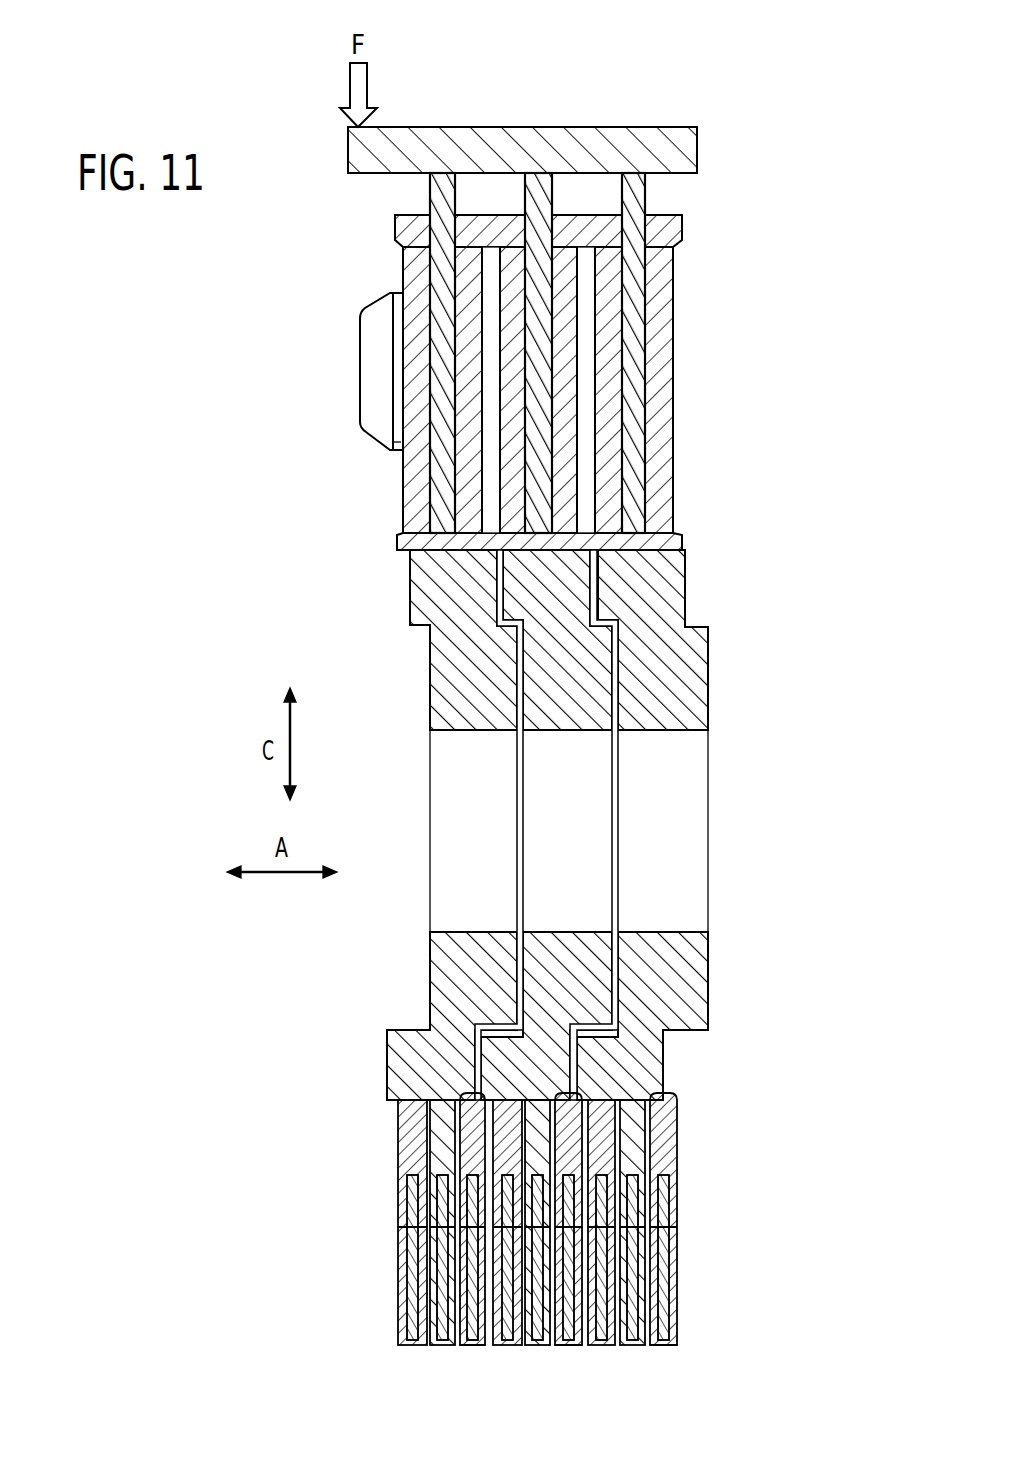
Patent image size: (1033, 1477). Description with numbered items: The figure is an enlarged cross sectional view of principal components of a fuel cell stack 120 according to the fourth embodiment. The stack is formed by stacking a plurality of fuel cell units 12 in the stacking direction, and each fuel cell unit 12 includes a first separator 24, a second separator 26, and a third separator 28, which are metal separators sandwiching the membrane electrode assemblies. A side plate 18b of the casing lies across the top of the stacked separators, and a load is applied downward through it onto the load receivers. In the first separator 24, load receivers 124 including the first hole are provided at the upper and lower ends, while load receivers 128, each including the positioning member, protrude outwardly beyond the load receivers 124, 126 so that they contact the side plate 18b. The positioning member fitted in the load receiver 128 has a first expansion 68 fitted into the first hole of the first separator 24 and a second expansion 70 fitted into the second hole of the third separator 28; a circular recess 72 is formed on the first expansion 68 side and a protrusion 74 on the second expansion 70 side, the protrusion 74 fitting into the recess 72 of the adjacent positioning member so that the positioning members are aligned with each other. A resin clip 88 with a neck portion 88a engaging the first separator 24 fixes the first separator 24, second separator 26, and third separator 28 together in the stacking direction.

The fuel cell stack 120 is at (790, 146).
The side plate 18b is at (350, 158).
The load receiver 124 is at (417, 213).
The load receiver 126 is at (475, 213).
The load receiver 128 is at (445, 170).
The first separator 24 is at (512, 213).
The second separator 26 is at (539, 170).
The third separator 28 is at (570, 213).
The fuel cell unit 12 is at (581, 62).
The resin clip 88 is at (373, 297).
The neck portion 88a is at (375, 392).
The circular recess 72 is at (428, 983).
The protrusion 74 is at (708, 970).
The first expansion 68 is at (387, 1076).
The second expansion 70 is at (660, 1055).